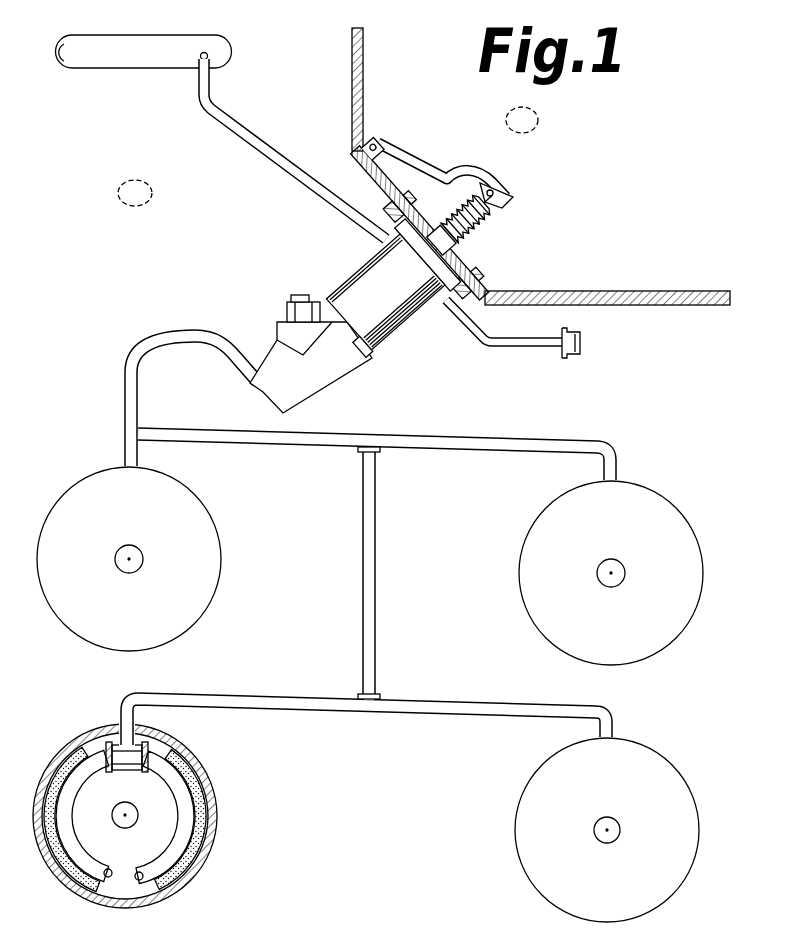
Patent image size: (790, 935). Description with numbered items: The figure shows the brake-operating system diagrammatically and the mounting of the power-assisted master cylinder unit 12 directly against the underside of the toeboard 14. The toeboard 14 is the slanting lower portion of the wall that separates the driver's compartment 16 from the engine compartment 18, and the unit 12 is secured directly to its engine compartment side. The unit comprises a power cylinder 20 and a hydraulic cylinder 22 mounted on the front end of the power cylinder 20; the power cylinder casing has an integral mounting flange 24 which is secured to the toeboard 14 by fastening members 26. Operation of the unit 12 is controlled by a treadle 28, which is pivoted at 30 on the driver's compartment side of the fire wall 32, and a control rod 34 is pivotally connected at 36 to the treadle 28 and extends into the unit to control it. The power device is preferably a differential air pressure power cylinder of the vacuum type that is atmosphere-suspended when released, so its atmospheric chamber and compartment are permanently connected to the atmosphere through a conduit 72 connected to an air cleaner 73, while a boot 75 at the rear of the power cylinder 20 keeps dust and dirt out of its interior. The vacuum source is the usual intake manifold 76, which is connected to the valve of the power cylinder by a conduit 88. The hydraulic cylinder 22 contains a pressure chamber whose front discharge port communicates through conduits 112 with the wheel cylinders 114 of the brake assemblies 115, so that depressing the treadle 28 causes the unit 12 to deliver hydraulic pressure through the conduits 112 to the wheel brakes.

The power-assisted master cylinder unit 12 is at (359, 255).
The toeboard 14 is at (356, 167).
The driver's compartment 16 is at (522, 120).
The engine compartment 18 is at (135, 193).
The power cylinder 20 is at (403, 327).
The hydraulic cylinder 22 is at (323, 372).
The mounting flange 24 is at (474, 298).
The fastening members 26 is at (404, 206).
The treadle 28 is at (421, 162).
The pivot 30 is at (375, 141).
The fire wall 32 is at (365, 64).
The control rod 34 is at (486, 203).
The pivotal connection 36 is at (500, 179).
The conduit 72 is at (508, 345).
The air cleaner 73 is at (575, 358).
The boot 75 is at (474, 231).
The intake manifold 76 is at (173, 44).
The conduit 88 is at (247, 133).
The conduits 112 is at (145, 353).
The wheel cylinders 114 is at (140, 754).
The brake assemblies 115 is at (117, 639).